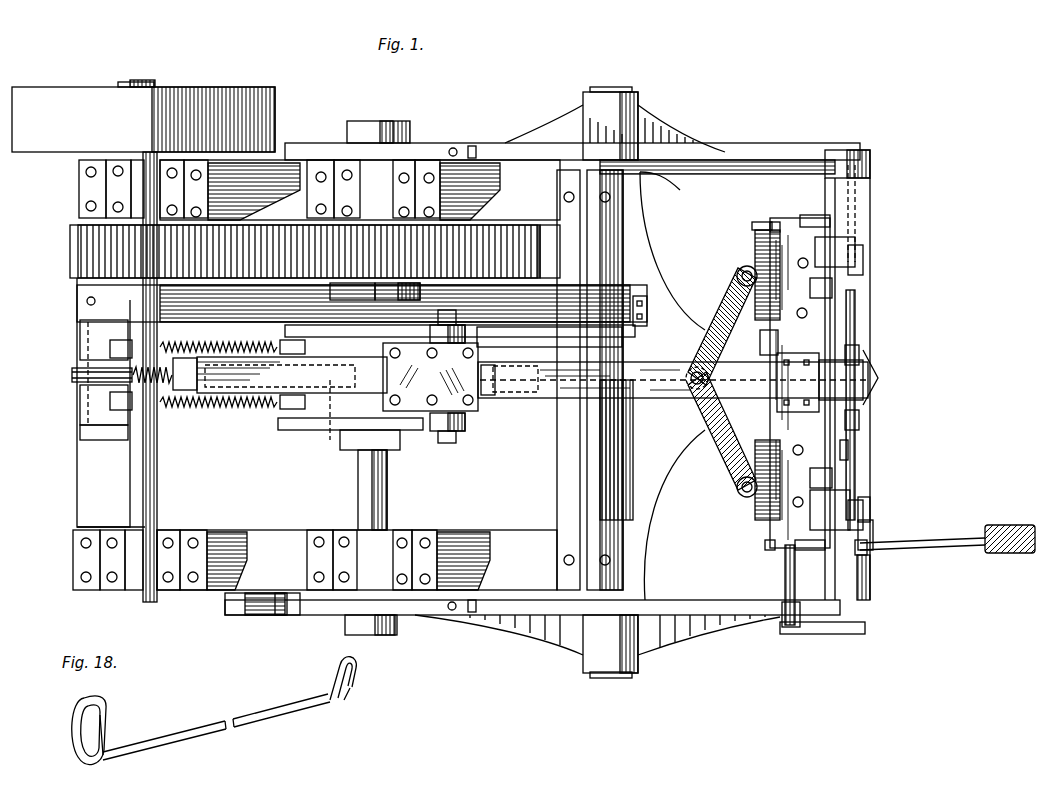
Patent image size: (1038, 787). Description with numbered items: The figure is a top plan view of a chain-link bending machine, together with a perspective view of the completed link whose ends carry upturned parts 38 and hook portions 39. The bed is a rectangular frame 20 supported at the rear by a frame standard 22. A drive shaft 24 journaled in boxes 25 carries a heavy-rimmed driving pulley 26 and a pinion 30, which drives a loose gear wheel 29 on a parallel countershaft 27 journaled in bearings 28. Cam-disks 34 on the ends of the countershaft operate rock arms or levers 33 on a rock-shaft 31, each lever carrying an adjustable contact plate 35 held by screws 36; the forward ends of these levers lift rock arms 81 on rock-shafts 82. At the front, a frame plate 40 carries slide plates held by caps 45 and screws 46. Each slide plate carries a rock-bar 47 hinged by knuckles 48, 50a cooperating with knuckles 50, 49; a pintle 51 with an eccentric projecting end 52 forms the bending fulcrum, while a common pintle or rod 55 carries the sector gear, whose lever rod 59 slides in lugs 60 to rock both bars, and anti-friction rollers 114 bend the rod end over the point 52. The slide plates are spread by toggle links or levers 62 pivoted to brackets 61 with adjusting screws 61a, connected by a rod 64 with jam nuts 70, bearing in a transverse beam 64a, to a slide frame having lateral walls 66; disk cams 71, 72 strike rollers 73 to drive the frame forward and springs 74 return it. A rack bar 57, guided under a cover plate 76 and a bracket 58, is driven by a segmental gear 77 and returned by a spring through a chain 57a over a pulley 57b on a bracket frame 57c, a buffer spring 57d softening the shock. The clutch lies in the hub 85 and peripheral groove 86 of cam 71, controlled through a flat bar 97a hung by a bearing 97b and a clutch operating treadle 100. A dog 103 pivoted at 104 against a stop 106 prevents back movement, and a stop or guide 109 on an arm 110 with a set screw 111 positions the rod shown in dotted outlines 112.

In FIG. 1, the rectangular frame 20 is at (478, 214).
In FIG. 1, the rear frame standard 22 is at (90, 465).
In FIG. 1, the drive shaft 24 is at (150, 448).
In FIG. 1, the boxes 25 is at (135, 185).
In FIG. 1, the driving pulley 26 is at (95, 96).
In FIG. 1, the countershaft 27 is at (365, 478).
In FIG. 1, the bearings 28 is at (367, 185).
In FIG. 1, the loose gear wheel 29 is at (458, 244).
In FIG. 1, the pinion 30 is at (82, 240).
In FIG. 1, the rock-shaft 31 is at (600, 336).
In FIG. 1, the rock arms or levers 33 is at (575, 122).
In FIG. 1, the cam-disks 34 is at (331, 152).
In FIG. 1, the adjustable contact plate 35 is at (474, 146).
In FIG. 1, the screws 36 is at (455, 146).
In FIG. 18, the upturned parts 38 is at (80, 728).
In FIG. 18, the hook portion 39 is at (104, 727).
In FIG. 1, the frame plate 40 is at (735, 440).
In FIG. 1, the caps 45 is at (790, 240).
In FIG. 1, the screws 46 is at (802, 266).
In FIG. 1, the rock-bar 47 is at (856, 322).
In FIG. 1, the knuckles 48 is at (865, 270).
In FIG. 1, the knuckles 49 is at (860, 354).
In FIG. 1, the knuckle 50 is at (850, 254).
In FIG. 1, the knuckle 50a is at (878, 380).
In FIG. 1, the pin or pintle 51 is at (868, 505).
In FIG. 1, the projecting end 52 is at (868, 549).
In FIG. 1, the common pintle or rod 55 is at (850, 446).
In FIG. 1, the rack bar 57 is at (590, 393).
In FIG. 1, the chain 57a is at (72, 374).
In FIG. 1, the pulley 57b is at (78, 365).
In FIG. 1, the bracket frame 57c is at (98, 415).
In FIG. 1, the buffer spring 57d is at (170, 385).
In FIG. 1, the bracket 58 is at (778, 378).
In FIG. 1, the shaft or rod 59 is at (752, 450).
In FIG. 1, the ears or lugs 60 is at (814, 300).
In FIG. 1, the bracket 61 is at (753, 262).
In FIG. 1, the adjusting screws 61a is at (774, 222).
In FIG. 1, the links or levers 62 is at (735, 297).
In FIG. 1, the rod 64 is at (515, 368).
In FIG. 1, the transverse beam 64a is at (598, 462).
In FIG. 1, the lateral walls 66 is at (310, 353).
In FIG. 1, the jam nuts 70 is at (505, 396).
In FIG. 1, the disk cam 71 is at (295, 331).
In FIG. 1, the disk cam 72 is at (305, 430).
In FIG. 1, the rollers 73 is at (468, 331).
In FIG. 1, the springs 74 is at (228, 345).
In FIG. 1, the cover plate 76 is at (452, 378).
In FIG. 1, the segmental gear 77 is at (330, 430).
In FIG. 1, the rock arms 81 is at (872, 203).
In FIG. 1, the rock-shafts 82 is at (757, 222).
In FIG. 1, the hub 85 is at (358, 318).
In FIG. 1, the peripheral groove 86 is at (366, 318).
In FIG. 1, the flat bar 97a is at (80, 297).
In FIG. 1, the bearing 97b is at (647, 312).
In FIG. 1, the clutch operating treadle 100 is at (958, 545).
In FIG. 1, the dog 103 is at (278, 616).
In FIG. 1, the pivot 104 is at (273, 593).
In FIG. 1, the stop 106 is at (226, 602).
In FIG. 1, the stop or guide 109 is at (830, 634).
In FIG. 1, the arm 110 is at (785, 576).
In FIG. 1, the set screw 111 is at (790, 624).
In FIG. 1, the dotted outlines 112 is at (858, 192).
In FIG. 18, the dotted outlines 112 is at (193, 738).
In FIG. 1, the anti-friction rollers 114 is at (822, 215).